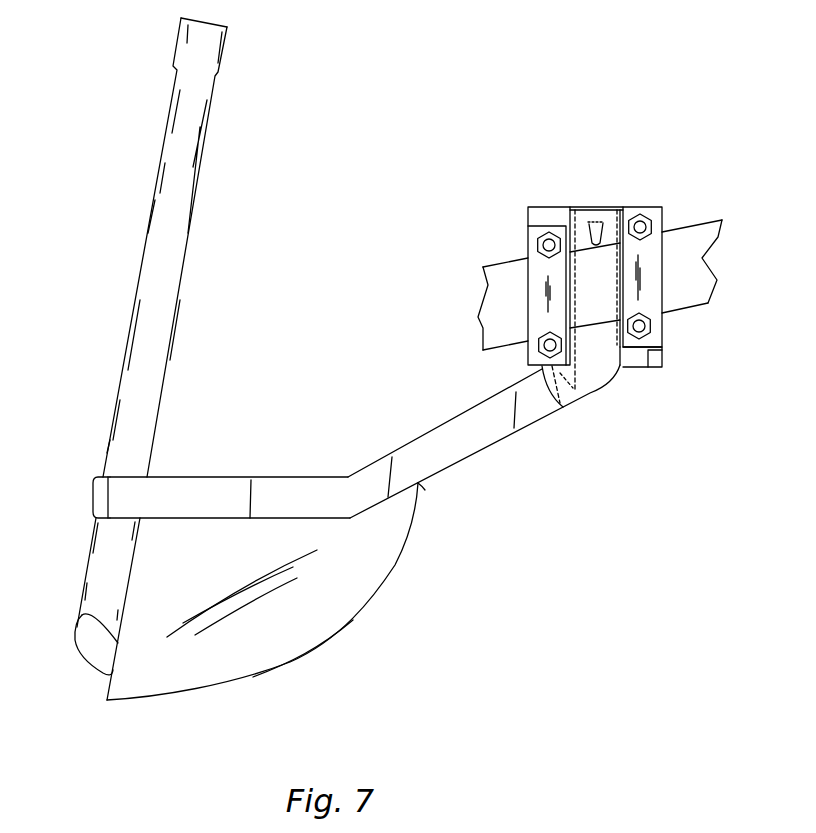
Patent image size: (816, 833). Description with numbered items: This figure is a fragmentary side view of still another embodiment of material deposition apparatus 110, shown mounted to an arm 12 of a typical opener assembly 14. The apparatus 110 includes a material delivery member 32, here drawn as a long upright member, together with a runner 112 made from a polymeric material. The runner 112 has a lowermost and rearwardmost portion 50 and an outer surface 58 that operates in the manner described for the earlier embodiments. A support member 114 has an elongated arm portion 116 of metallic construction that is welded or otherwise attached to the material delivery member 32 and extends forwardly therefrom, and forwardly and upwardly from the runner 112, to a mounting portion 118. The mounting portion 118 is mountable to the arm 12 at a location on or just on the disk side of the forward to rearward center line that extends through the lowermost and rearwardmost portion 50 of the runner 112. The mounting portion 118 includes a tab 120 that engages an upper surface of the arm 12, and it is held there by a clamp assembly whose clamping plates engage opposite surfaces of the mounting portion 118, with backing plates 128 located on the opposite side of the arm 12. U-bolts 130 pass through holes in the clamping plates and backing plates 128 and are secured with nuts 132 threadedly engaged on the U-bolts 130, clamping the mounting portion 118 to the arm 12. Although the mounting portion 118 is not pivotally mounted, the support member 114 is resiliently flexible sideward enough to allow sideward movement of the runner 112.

The arm 12 is at (687, 228).
The opener assembly 14 is at (722, 218).
The material delivery member 32 is at (221, 60).
The lowermost and rearwardmost portion 50 is at (105, 687).
The outer surface 58 is at (338, 595).
The material deposition apparatus 110 is at (532, 612).
The runner 112 is at (300, 652).
The support member 114 is at (512, 432).
The elongated arm portion 116 is at (303, 477).
The mounting portion 118 is at (588, 206).
The tab 120 is at (598, 220).
The backing plates 128 is at (552, 408).
The U-bolts 130 is at (546, 236).
The nuts 132 is at (540, 246).